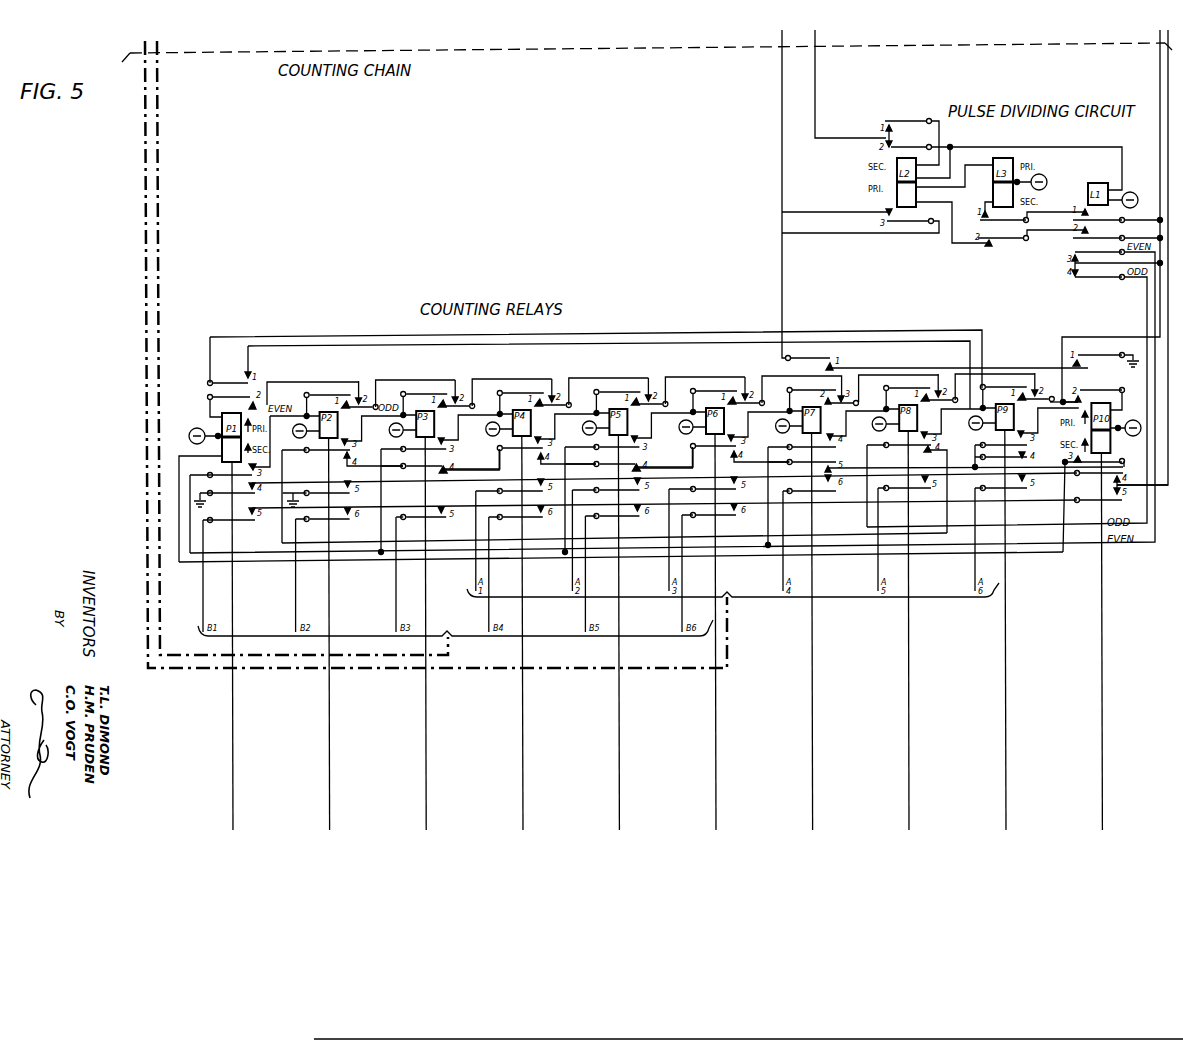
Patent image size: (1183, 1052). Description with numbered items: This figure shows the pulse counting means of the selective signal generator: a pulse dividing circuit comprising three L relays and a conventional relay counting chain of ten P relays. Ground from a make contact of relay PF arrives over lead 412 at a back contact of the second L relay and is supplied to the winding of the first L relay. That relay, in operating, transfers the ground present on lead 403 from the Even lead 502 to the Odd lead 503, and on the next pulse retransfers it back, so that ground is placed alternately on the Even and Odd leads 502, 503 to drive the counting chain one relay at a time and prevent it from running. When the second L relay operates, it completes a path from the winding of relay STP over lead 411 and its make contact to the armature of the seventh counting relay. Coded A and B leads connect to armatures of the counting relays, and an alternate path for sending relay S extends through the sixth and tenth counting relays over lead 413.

The lead 411 is at (782, 70).
The lead 412 is at (815, 70).
The lead 403 is at (1160, 70).
The lead 413 is at (1168, 327).
The Even lead 502 is at (1147, 292).
The Odd lead 503 is at (1155, 309).